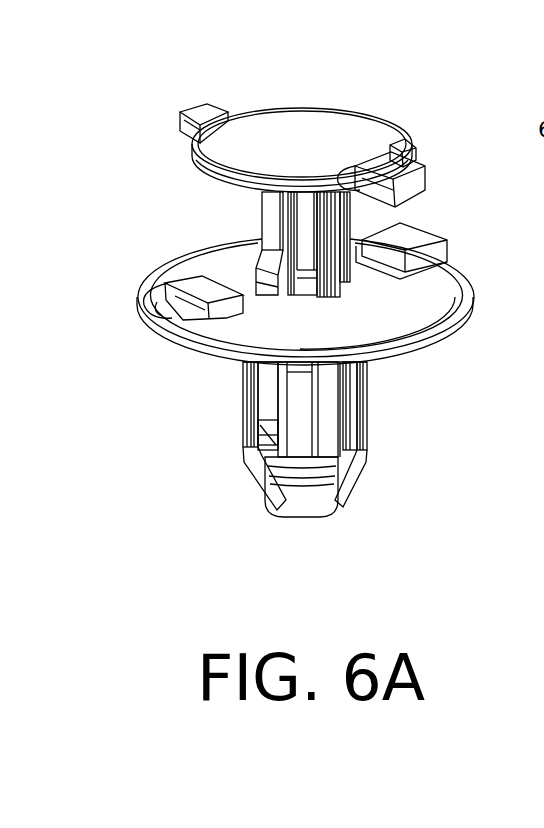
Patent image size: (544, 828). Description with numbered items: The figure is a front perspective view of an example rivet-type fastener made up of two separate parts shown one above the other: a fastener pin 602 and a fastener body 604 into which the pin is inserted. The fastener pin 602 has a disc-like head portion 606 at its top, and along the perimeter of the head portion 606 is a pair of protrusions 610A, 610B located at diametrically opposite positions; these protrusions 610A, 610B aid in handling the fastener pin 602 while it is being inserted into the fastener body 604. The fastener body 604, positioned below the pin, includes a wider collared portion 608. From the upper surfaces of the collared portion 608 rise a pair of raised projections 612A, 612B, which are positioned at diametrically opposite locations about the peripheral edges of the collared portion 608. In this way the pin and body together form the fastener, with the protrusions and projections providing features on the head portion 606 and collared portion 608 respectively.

The fastener pin 602 is at (300, 171).
The fastener body 604 is at (301, 370).
The head portion 606 is at (282, 108).
The collared portion 608 is at (417, 310).
The protrusion 610A is at (193, 112).
The protrusion 610B is at (400, 148).
The raised projection 612A is at (203, 297).
The raised projection 612B is at (392, 176).